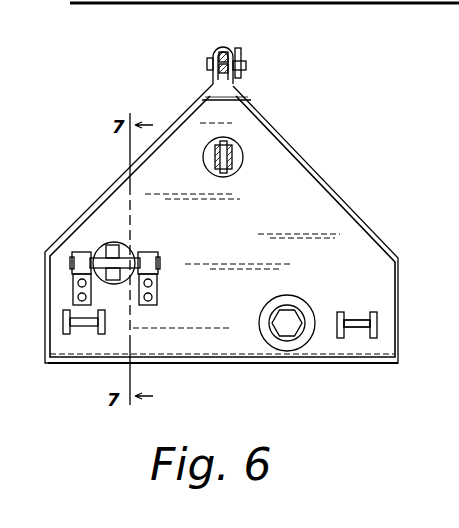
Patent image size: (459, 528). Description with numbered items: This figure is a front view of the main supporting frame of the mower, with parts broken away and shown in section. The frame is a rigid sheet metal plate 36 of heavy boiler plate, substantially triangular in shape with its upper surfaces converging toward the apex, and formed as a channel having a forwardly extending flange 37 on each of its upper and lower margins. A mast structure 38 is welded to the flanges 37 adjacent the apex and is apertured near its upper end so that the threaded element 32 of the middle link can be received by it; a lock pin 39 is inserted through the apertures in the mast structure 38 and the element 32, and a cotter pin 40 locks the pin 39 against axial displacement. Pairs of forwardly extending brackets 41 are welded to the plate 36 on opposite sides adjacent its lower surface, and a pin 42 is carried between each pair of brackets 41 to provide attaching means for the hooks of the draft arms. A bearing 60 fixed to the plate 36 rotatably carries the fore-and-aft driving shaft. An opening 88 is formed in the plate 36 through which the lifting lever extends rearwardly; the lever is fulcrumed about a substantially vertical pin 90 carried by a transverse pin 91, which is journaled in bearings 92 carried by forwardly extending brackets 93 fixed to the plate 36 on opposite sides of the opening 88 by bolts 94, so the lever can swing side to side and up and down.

The threaded element 32 is at (222, 50).
The rigid sheet metal plate 36 is at (221, 223).
The forwardly extending flange 37 is at (127, 180).
The mast structure 38 is at (250, 95).
The lock pin 39 is at (246, 65).
The cotter pin 40 is at (239, 50).
The forwardly extending brackets 41 is at (97, 333).
The pin 42 is at (350, 338).
The bearing 60 is at (244, 157).
The opening 88 is at (127, 272).
The vertical pin 90 is at (116, 245).
The transverse pin 91 is at (130, 252).
The bearings 92 is at (82, 252).
The forwardly extending brackets 93 is at (153, 297).
The bolts 94 is at (153, 283).